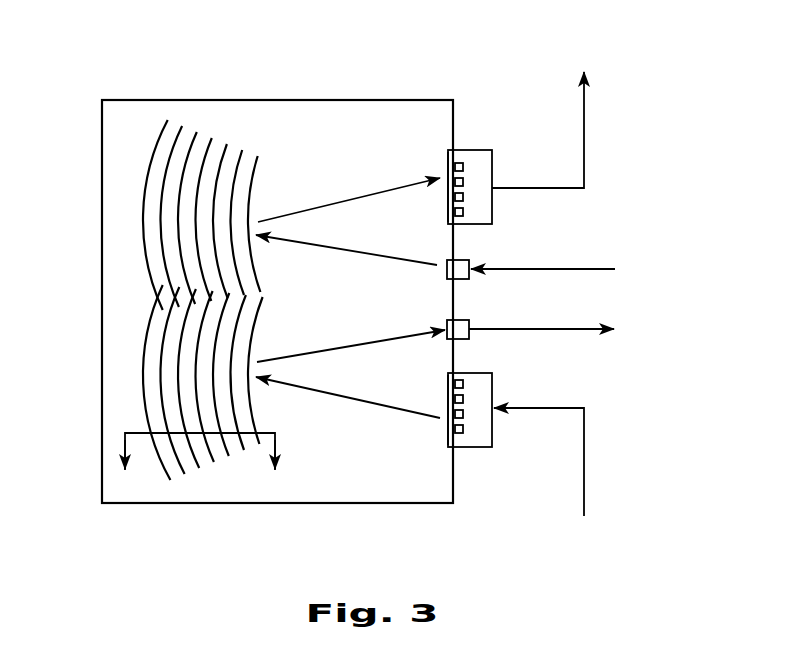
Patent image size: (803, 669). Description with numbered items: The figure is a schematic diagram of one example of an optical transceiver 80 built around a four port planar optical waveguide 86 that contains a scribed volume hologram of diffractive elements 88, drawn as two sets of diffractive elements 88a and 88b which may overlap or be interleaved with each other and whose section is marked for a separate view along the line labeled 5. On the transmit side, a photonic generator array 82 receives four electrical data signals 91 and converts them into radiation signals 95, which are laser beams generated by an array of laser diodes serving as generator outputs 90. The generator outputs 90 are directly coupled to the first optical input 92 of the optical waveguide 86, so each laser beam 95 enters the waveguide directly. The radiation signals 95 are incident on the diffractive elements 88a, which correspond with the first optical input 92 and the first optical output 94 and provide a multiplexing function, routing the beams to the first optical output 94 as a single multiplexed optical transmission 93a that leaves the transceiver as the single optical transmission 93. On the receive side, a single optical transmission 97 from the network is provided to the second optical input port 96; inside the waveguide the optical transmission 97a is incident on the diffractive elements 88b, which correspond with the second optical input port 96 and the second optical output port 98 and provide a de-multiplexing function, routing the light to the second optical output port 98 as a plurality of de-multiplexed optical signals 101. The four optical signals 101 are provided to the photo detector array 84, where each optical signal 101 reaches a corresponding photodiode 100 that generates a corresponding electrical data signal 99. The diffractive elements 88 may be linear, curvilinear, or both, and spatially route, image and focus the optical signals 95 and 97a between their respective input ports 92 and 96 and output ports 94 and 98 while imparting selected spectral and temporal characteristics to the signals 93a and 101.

The transceiver 80 is at (328, 55).
The photonic generator array 82 is at (458, 458).
The photo detector array 84 is at (471, 144).
The optical waveguide 86 is at (316, 480).
The diffractive elements 88 is at (140, 300).
The diffractive elements 88a is at (140, 378).
The diffractive elements 88b is at (140, 222).
The generator outputs 90 is at (463, 383).
The data signals 91 is at (584, 472).
The first optical input 92 is at (448, 432).
The optical transmission 93 is at (578, 328).
The optical transmission 93a is at (285, 355).
The first optical output 94 is at (463, 320).
The radiation signals 95 is at (343, 398).
The second optical input port 96 is at (470, 262).
The optical transmission 97 is at (560, 268).
The optical transmission 97a is at (368, 253).
The second optical output port 98 is at (448, 152).
The data signals 99 is at (584, 152).
The photodiodes 100 is at (463, 168).
The optical signals 101 is at (343, 200).
The section line 5- 5 is at (199, 470).